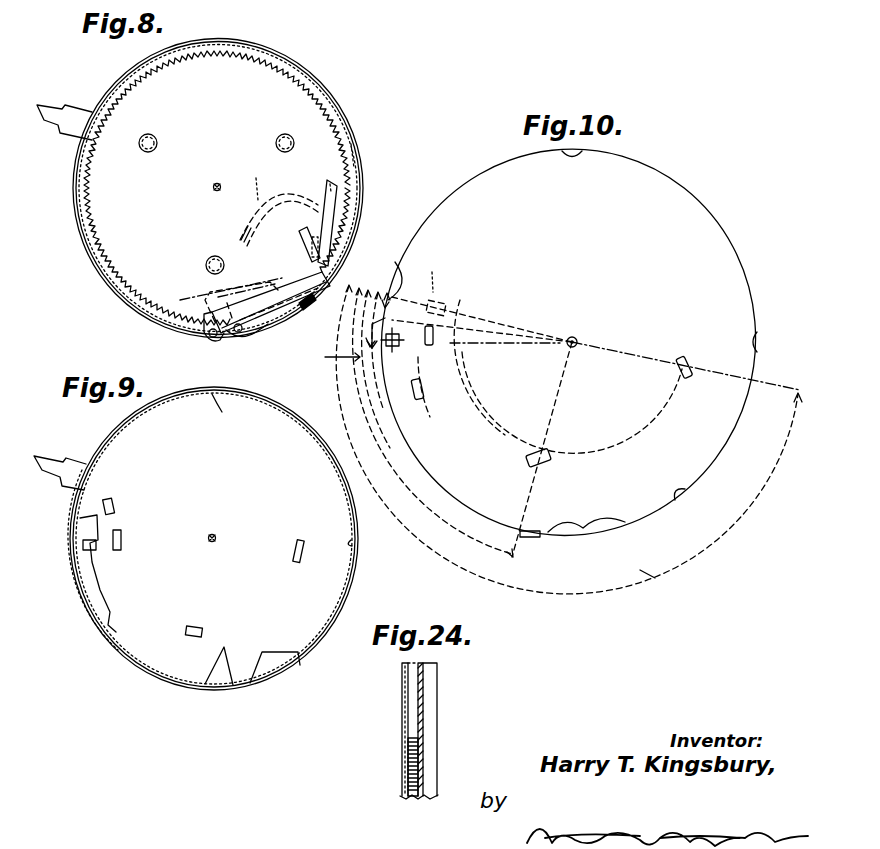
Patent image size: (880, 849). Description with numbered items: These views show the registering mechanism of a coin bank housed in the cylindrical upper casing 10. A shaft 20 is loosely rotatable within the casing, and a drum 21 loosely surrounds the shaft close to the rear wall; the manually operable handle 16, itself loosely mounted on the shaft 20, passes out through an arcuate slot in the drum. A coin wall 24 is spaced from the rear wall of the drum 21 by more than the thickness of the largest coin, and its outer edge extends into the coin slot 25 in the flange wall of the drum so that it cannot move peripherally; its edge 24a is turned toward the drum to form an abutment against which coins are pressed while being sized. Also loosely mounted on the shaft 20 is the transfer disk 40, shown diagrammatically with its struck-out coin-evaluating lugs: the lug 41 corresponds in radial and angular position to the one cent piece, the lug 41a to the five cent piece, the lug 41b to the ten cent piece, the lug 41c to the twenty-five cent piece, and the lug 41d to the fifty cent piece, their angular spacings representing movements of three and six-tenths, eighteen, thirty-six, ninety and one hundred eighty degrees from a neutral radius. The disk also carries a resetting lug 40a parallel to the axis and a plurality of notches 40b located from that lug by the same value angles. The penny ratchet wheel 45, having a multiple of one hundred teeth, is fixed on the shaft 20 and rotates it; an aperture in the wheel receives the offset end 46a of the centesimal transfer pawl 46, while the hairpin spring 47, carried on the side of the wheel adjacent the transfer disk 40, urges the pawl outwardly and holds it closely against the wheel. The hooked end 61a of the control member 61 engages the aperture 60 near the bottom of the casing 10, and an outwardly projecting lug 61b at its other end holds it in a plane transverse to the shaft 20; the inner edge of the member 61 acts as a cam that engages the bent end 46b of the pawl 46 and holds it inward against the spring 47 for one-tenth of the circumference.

In FIG. 8, the upper casing 10 is at (343, 122).
In FIG. 9, the upper casing 10 is at (360, 548).
In FIG. 8, the handle 16 is at (54, 108).
In FIG. 9, the handle 16 is at (54, 462).
In FIG. 8, the shaft 20 is at (214, 186).
In FIG. 9, the shaft 20 is at (225, 522).
In FIG. 9, the drum 21 is at (106, 634).
In FIG. 24, the drum 21 is at (405, 767).
In FIG. 24, the coin wall 24 is at (423, 724).
In FIG. 24, the edge of the coin wall 24a is at (412, 712).
In FIG. 24, the coin slot 25 is at (410, 672).
In FIG. 9, the transfer disk 40 is at (204, 542).
In FIG. 10, the transfer disk 40 is at (700, 226).
In FIG. 10, the resetting lug 40a is at (530, 537).
In FIG. 9, the notches 40b is at (212, 396).
In FIG. 10, the notches 40b is at (570, 160).
In FIG. 10, the lug 41 is at (448, 270).
In FIG. 10, the lug 41a is at (448, 313).
In FIG. 10, the lug 41b is at (424, 402).
In FIG. 10, the lug 41c is at (550, 452).
In FIG. 10, the lug 41d is at (680, 360).
In FIG. 8, the penny ratchet wheel 45 is at (290, 96).
In FIG. 8, the centesimal transfer pawl 46 is at (322, 205).
In FIG. 8, the offset end 46a is at (358, 160).
In FIG. 8, the bent end 46b is at (306, 256).
In FIG. 8, the hairpin spring 47 is at (258, 178).
In FIG. 8, the aperture 60 is at (238, 334).
In FIG. 8, the control member 61 is at (285, 318).
In FIG. 9, the control member 61 is at (92, 560).
In FIG. 8, the hooked end 61a is at (212, 339).
In FIG. 8, the outwardly projecting lug 61b is at (312, 298).